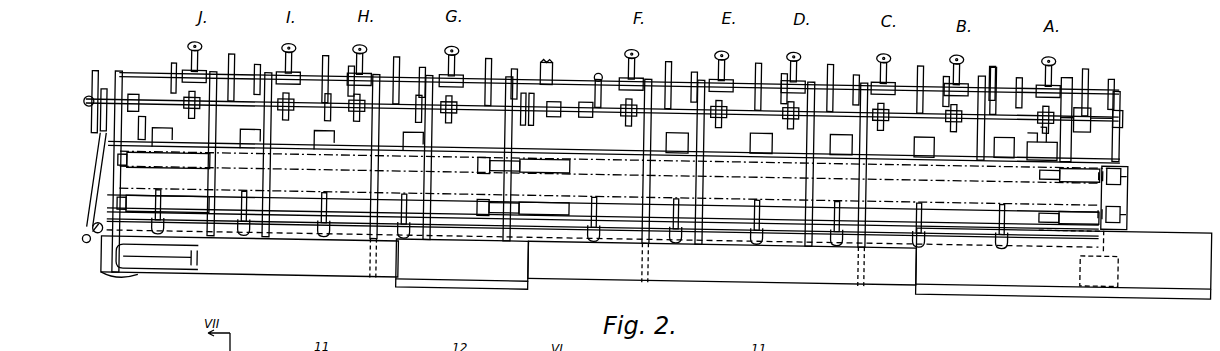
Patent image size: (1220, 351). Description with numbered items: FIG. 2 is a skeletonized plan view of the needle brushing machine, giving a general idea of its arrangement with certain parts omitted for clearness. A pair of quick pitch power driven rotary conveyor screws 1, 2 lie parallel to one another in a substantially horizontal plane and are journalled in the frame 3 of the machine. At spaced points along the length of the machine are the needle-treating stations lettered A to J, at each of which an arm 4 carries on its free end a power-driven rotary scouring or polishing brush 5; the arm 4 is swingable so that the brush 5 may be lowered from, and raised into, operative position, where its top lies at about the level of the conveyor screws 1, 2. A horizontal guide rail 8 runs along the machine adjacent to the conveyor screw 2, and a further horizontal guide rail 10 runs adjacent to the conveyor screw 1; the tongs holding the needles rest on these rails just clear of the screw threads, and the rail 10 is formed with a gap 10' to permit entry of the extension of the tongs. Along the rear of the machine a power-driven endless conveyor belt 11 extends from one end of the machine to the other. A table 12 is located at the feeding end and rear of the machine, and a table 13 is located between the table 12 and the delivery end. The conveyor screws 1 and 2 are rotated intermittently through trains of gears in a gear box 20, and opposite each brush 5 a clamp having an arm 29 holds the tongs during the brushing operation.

The rotary conveyor screw 1 is at (152, 196).
The rotary conveyor screw 2 is at (150, 166).
The frame 3 is at (113, 180).
The arm 4 is at (1042, 144).
The scouring or polishing brush 5 is at (399, 129).
The horizontal guide rail 8 is at (334, 153).
The horizontal guide rail 10 is at (602, 223).
The gap 10' is at (602, 241).
The endless conveyor belt 11 is at (509, 262).
The table 12 is at (1064, 263).
The table 13 is at (462, 264).
The gear box 20 is at (1122, 180).
The arm 29 is at (580, 209).